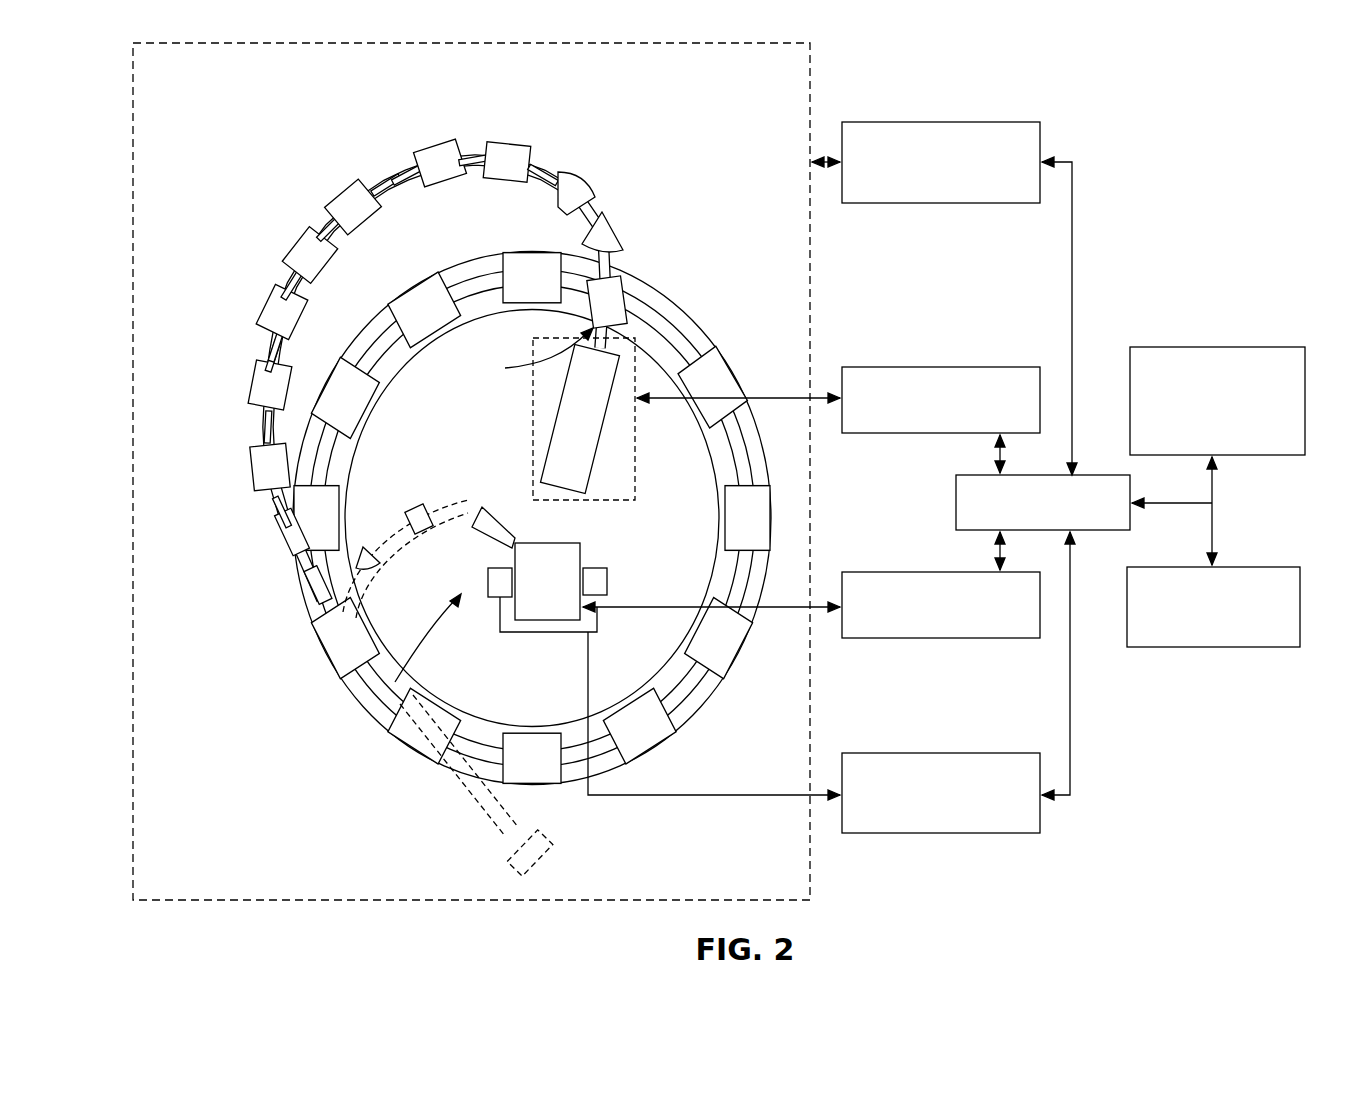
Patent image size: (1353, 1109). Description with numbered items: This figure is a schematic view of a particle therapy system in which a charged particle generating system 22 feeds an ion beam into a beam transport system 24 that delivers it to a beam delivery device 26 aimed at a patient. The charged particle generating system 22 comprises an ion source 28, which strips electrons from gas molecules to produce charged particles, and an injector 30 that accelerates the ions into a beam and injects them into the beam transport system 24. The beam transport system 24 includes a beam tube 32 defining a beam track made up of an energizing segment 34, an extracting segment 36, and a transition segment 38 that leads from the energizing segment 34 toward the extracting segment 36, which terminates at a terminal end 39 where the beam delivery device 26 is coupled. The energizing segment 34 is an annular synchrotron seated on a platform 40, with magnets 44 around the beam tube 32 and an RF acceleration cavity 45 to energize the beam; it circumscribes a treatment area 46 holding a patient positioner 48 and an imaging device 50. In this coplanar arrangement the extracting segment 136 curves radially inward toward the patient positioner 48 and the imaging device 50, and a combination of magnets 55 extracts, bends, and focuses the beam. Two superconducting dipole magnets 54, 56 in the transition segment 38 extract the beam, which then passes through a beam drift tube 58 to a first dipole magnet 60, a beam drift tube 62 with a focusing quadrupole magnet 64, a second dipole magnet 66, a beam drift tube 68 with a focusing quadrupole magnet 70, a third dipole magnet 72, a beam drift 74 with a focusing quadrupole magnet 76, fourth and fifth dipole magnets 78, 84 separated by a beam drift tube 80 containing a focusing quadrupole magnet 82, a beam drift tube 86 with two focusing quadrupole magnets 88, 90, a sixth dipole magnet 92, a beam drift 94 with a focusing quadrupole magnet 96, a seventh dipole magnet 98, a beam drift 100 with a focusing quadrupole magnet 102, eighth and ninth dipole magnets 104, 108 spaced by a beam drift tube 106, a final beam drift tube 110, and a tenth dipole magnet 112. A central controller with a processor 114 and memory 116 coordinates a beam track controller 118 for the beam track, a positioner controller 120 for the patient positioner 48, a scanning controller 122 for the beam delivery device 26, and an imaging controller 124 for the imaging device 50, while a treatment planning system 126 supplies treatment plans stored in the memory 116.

The charged particle generating system 22 is at (483, 826).
The beam transport system 24 is at (518, 518).
The beam delivery device 26 is at (603, 417).
The ion source 28 is at (548, 847).
The injector 30 is at (465, 797).
The beam tube 32 is at (698, 362).
The energizing segment 34 is at (737, 600).
The extracting segment 36 is at (371, 195).
The transition segment 38 is at (330, 550).
The terminal end 39 is at (534, 355).
The platform 40 is at (703, 697).
The magnets 44 is at (428, 707).
The RF acceleration cavity 45 is at (740, 525).
The treatment area 46 is at (367, 707).
The patient positioner 48 is at (528, 545).
The imaging device 50 is at (598, 570).
The superconducting dipole magnet 54 is at (308, 600).
The magnets 55 is at (427, 508).
The superconducting dipole magnet 56 is at (275, 524).
The beam drift tube 58 is at (273, 508).
The first dipole magnet 60 is at (253, 477).
The beam drift tube 62 is at (255, 442).
The focusing quadrupole magnet 64 is at (257, 427).
The second dipole magnet 66 is at (262, 393).
The beam drift tube 68 is at (263, 356).
The focusing quadrupole magnet 70 is at (264, 348).
The third dipole magnet 72 is at (270, 312).
The beam drift 74 is at (297, 298).
The focusing quadrupole magnet 76 is at (286, 266).
The fourth dipole magnet 78 is at (316, 268).
The beam drift tube 80 is at (320, 220).
The focusing quadrupole magnet 82 is at (323, 222).
The fifth dipole magnet 84 is at (340, 200).
The beam drift tube 86 is at (378, 170).
The focusing quadrupole magnet 88 is at (402, 190).
The focusing quadrupole magnet 90 is at (418, 185).
The sixth dipole magnet 92 is at (430, 140).
The beam drift 94 is at (441, 150).
The focusing quadrupole magnet 96 is at (476, 148).
The seventh dipole magnet 98 is at (498, 183).
The beam drift 100 is at (533, 165).
The focusing quadrupole magnet 102 is at (549, 168).
The eighth dipole magnet 104 is at (570, 174).
The beam drift tube 106 is at (596, 205).
The ninth dipole magnet 108 is at (606, 228).
The final beam drift tube 110 is at (612, 258).
The tenth dipole magnet 112 is at (622, 302).
The processor 114 is at (1077, 533).
The memory 116 is at (1195, 565).
The beam track controller 118 is at (905, 120).
The positioner controller 120 is at (905, 570).
The scanning controller 122 is at (905, 365).
The imaging controller 124 is at (905, 752).
The treatment planning system 126 is at (1195, 345).
The extracting segment 136 is at (470, 508).